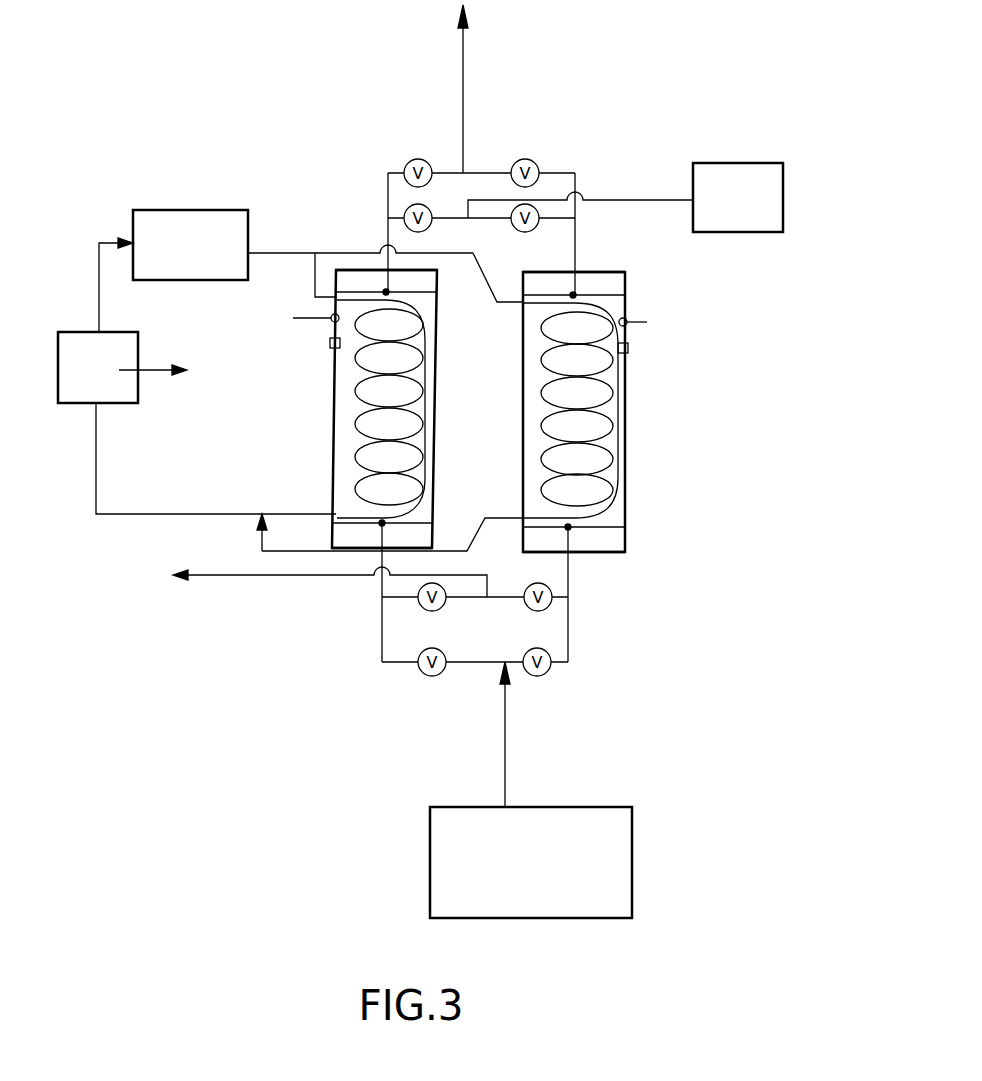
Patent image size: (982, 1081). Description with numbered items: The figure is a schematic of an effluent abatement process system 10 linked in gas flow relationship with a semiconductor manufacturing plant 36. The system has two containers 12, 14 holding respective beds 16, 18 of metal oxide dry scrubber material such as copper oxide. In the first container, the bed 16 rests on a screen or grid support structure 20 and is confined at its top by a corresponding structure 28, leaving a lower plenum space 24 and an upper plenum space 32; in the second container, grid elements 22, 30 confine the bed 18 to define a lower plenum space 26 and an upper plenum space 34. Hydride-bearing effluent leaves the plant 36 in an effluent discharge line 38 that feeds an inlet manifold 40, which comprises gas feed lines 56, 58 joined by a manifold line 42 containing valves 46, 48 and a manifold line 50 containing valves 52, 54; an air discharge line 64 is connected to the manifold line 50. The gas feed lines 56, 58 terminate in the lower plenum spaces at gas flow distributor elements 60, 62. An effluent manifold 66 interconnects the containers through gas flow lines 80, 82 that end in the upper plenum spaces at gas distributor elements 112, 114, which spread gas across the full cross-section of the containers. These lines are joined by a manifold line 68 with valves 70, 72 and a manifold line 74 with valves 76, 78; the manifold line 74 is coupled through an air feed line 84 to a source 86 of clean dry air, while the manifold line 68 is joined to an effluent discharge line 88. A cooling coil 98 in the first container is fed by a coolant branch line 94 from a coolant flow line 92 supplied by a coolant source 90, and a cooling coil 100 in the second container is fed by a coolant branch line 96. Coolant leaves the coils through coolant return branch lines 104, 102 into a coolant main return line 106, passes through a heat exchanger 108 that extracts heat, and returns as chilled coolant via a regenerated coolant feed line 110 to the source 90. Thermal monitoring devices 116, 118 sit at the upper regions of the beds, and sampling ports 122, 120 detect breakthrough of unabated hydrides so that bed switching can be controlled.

The effluent abatement process system 10 is at (262, 756).
The container 12 is at (333, 430).
The container 14 is at (622, 418).
The dry scrubber material bed 16 is at (345, 395).
The dry scrubber material bed 18 is at (530, 378).
The support structure 20 is at (420, 522).
The screen or grid element 22 is at (618, 513).
The plenum space 24 is at (345, 543).
The lower plenum space 26 is at (603, 540).
The structure 28 is at (365, 292).
The screen or grid element 30 is at (612, 297).
The plenum space 32 is at (333, 275).
The upper plenum space 34 is at (603, 285).
The semiconductor manufacturing plant 36 is at (632, 842).
The effluent discharge line 38 is at (505, 753).
The inlet manifold 40 is at (358, 650).
The manifold line 42 is at (518, 665).
The valve 46 is at (441, 675).
The valve 48 is at (547, 674).
The manifold line 50 is at (508, 597).
The valve 52 is at (443, 608).
The valve 54 is at (527, 608).
The gas feed line 56 is at (382, 620).
The gas feed line 58 is at (570, 612).
The gas flow distributor element 60 is at (384, 524).
The gas flow distributor element 62 is at (570, 529).
The air discharge line 64 is at (255, 578).
The effluent manifold 66 is at (359, 150).
The manifold line 68 is at (490, 172).
The valve 70 is at (417, 158).
The valve 72 is at (535, 158).
The manifold line 74 is at (498, 222).
The valve 76 is at (430, 227).
The valve 78 is at (535, 229).
The gas flow line 80 is at (388, 186).
The gas flow line 82 is at (577, 230).
The air feed line 84 is at (615, 200).
The source of clean dry air 86 is at (773, 187).
The effluent discharge line 88 is at (463, 97).
The source of coolant medium 90 is at (180, 210).
The coolant flow line 92 is at (332, 252).
The coolant branch line 94 is at (314, 295).
The coolant branch line 96 is at (483, 289).
The cooling coil 98 is at (425, 373).
The cooling coil 100 is at (612, 377).
The coolant return branch line 102 is at (502, 517).
The coolant return branch line 104 is at (290, 514).
The coolant main return line 106 is at (132, 515).
The heat exchanger 108 is at (138, 395).
The regenerated coolant feed line 110 is at (99, 290).
The gas distributor element 112 is at (390, 291).
The gas distributor element 114 is at (575, 293).
The thermal monitoring device 116 is at (333, 321).
The thermal monitoring device 118 is at (627, 325).
The sampling port 120 is at (630, 352).
The sampling port 122 is at (330, 346).